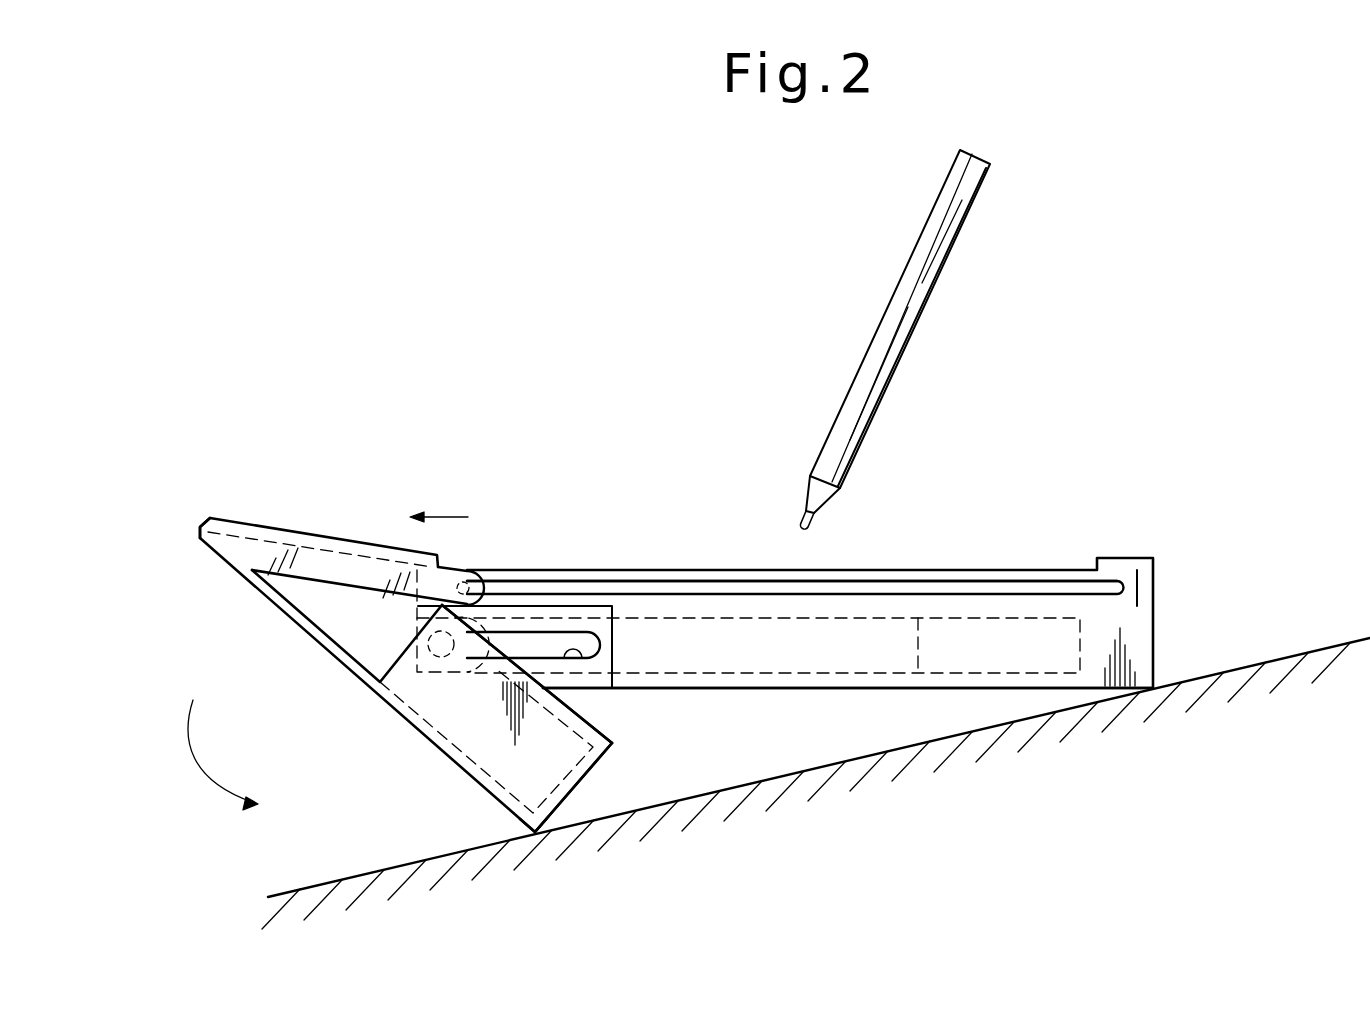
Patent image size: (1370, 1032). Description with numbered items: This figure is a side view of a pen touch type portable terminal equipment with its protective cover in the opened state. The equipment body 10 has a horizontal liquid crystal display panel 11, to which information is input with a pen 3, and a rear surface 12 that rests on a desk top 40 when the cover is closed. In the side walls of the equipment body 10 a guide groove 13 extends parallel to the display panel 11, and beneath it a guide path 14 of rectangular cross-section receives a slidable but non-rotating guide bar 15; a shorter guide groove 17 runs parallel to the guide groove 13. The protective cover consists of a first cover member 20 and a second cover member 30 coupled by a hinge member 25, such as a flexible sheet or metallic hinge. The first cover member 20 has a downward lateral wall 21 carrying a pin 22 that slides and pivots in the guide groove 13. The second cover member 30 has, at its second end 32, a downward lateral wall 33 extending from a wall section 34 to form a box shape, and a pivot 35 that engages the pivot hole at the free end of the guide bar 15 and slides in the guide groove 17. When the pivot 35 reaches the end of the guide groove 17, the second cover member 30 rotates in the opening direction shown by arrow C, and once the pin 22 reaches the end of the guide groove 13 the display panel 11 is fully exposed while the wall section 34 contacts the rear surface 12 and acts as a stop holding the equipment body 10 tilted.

The pen 3 is at (905, 350).
The equipment body 10 is at (1160, 606).
The liquid crystal display panel 11 is at (640, 570).
The rear surface 12 is at (860, 690).
The guide groove 13 is at (1008, 585).
The guide path 14 is at (732, 625).
The guide bar 15 is at (576, 625).
The guide groove 17 is at (580, 660).
The first cover member 20 is at (345, 537).
The lateral wall 21 is at (365, 577).
The pin 22 is at (481, 570).
The hinge member 25 is at (193, 527).
The second cover member 30 is at (345, 688).
The second end 32 is at (535, 833).
The lateral wall 33 is at (500, 800).
The wall section 34 is at (574, 712).
The pivot 35 is at (455, 672).
The desk top 40 is at (1297, 654).
The arrow C is at (223, 765).